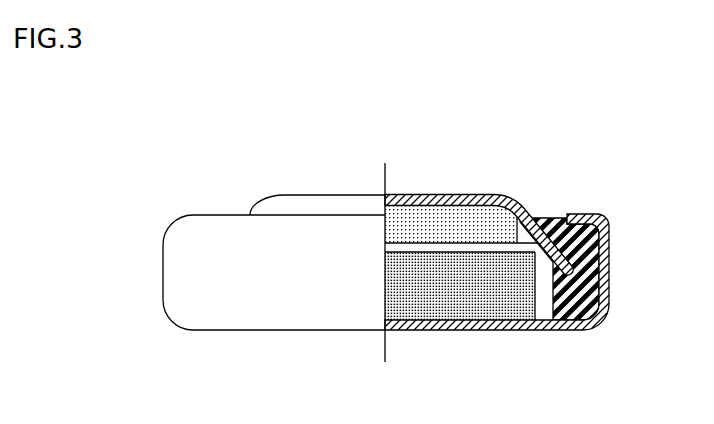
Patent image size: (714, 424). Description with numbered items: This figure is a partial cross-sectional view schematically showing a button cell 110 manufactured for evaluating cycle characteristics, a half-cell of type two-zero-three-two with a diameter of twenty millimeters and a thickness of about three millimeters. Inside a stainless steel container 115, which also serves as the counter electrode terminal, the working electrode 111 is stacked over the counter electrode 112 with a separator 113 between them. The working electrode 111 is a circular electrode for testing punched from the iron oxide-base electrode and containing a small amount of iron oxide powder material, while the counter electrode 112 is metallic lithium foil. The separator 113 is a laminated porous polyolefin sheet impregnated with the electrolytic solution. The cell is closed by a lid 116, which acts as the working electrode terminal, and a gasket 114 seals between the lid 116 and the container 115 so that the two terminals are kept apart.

The button cell 110 is at (429, 250).
The working electrode 111 is at (448, 195).
The counter electrode 112 is at (468, 315).
The separator impregnated with the electrolytic solution 113 is at (477, 248).
The gasket 114 is at (592, 252).
The container 115 is at (272, 320).
The lid 116 is at (325, 195).